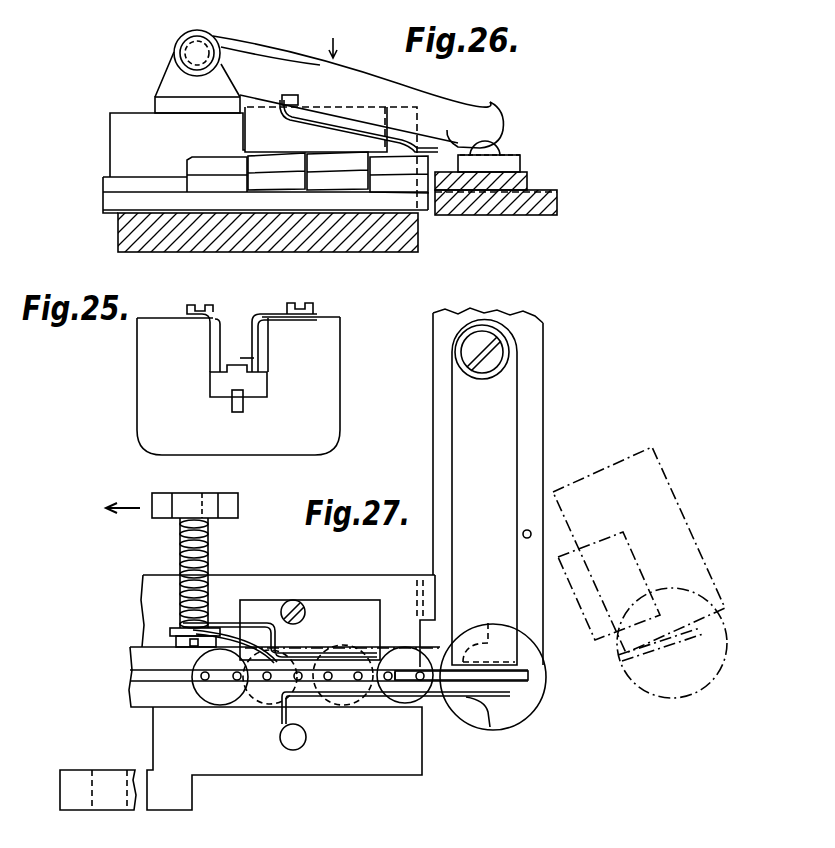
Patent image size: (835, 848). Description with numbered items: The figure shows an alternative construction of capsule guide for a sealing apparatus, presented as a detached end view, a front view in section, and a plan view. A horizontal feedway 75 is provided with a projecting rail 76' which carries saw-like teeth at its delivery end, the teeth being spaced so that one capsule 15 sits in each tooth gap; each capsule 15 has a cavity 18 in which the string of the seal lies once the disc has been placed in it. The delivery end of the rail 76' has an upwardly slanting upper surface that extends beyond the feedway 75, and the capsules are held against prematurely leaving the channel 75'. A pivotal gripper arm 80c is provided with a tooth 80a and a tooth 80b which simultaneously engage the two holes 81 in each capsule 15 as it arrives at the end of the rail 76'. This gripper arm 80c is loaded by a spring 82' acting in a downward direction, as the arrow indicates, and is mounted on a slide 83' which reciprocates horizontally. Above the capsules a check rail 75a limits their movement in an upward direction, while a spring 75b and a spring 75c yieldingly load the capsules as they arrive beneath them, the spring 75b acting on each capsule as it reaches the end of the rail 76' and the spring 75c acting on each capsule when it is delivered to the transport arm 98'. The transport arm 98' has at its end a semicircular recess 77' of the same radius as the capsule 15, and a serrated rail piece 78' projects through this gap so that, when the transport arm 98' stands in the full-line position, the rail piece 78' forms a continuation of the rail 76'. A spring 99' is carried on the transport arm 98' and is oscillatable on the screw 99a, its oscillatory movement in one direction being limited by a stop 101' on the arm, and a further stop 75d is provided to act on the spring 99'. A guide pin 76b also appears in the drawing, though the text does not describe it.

In FIG. 26, the capsule 15 is at (222, 170).
In FIG. 25, the capsule 15 is at (213, 378).
In FIG. 26, the cavity 18 is at (197, 157).
In FIG. 27, the cavity 18 is at (400, 684).
In FIG. 26, the feedway 75 is at (250, 139).
In FIG. 25, the feedway 75 is at (260, 386).
In FIG. 27, the feedway 75 is at (304, 692).
In FIG. 25, the channel 75' is at (254, 317).
In FIG. 25, the check rail 75a is at (272, 332).
In FIG. 27, the spring 75b is at (313, 650).
In FIG. 25, the spring 75c is at (252, 315).
In FIG. 27, the spring 75c is at (454, 728).
In FIG. 27, the stop 75d is at (443, 587).
In FIG. 26, the projecting rail 76' is at (292, 146).
In FIG. 25, the guide pin 76b is at (233, 401).
In FIG. 27, the guide pin 76b is at (107, 800).
In FIG. 27, the semicircular recess 77' is at (609, 688).
In FIG. 27, the serrated rail piece 78' is at (586, 655).
In FIG. 26, the tooth 80a is at (490, 148).
In FIG. 26, the tooth 80b is at (507, 153).
In FIG. 26, the pivotal gripper arm 80c is at (474, 109).
In FIG. 27, the pivotal gripper arm 80c is at (346, 642).
In FIG. 27, the holes 81 is at (236, 680).
In FIG. 26, the spring 82' is at (352, 77).
In FIG. 27, the spring 82' is at (209, 582).
In FIG. 26, the slide 83' is at (181, 71).
In FIG. 27, the slide 83' is at (212, 488).
In FIG. 26, the transport arm 98' is at (515, 211).
In FIG. 27, the transport arm 98' is at (581, 503).
In FIG. 27, the spring 99' is at (503, 510).
In FIG. 27, the screw 99a is at (483, 335).
In FIG. 27, the stop 101' is at (561, 480).